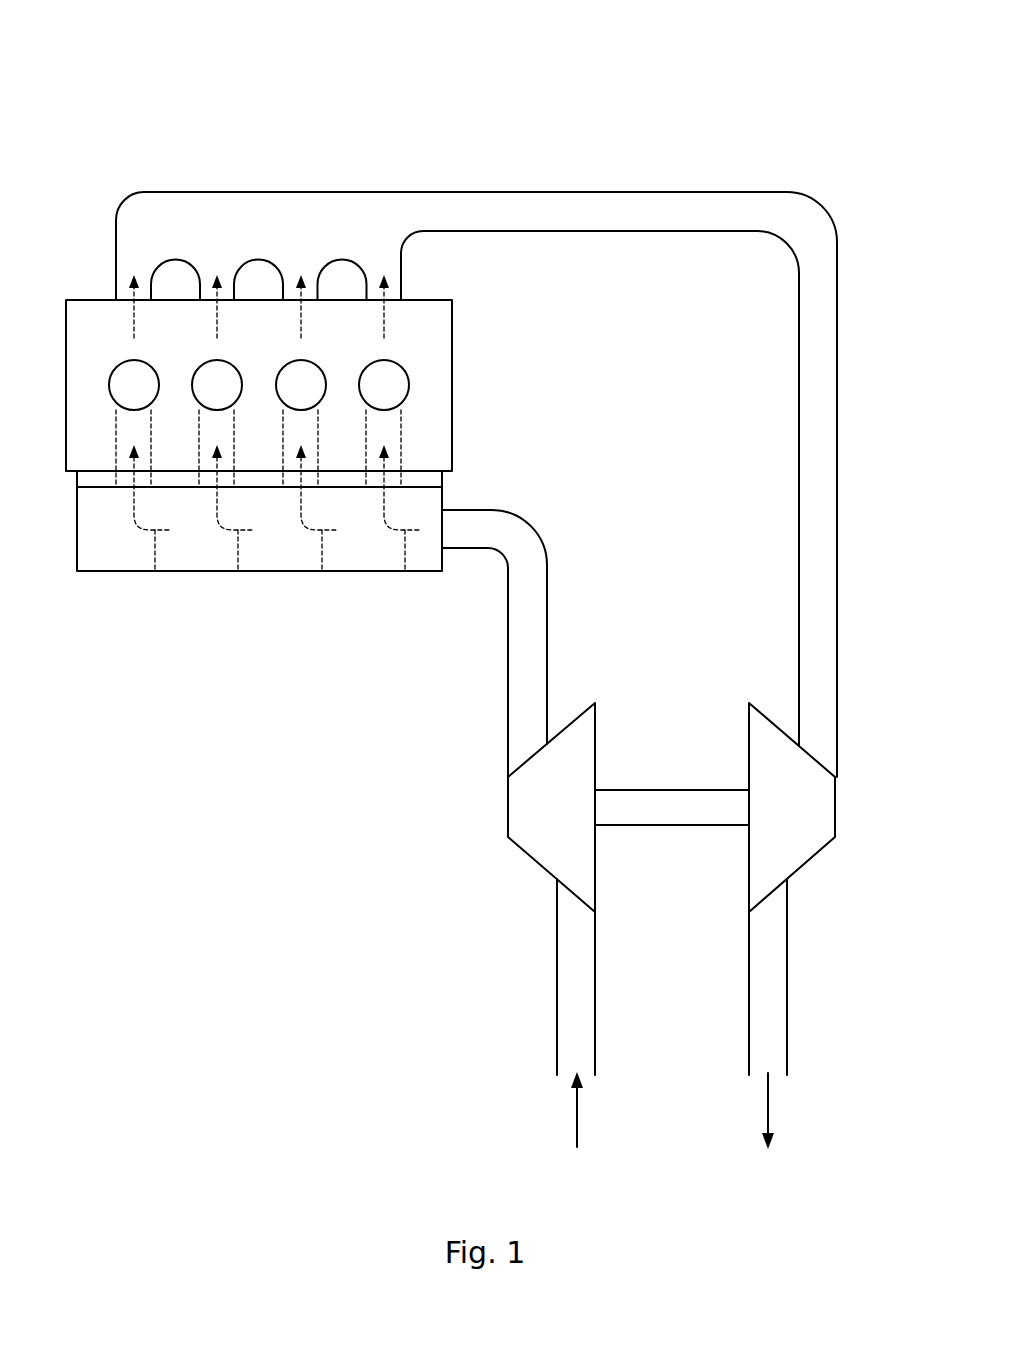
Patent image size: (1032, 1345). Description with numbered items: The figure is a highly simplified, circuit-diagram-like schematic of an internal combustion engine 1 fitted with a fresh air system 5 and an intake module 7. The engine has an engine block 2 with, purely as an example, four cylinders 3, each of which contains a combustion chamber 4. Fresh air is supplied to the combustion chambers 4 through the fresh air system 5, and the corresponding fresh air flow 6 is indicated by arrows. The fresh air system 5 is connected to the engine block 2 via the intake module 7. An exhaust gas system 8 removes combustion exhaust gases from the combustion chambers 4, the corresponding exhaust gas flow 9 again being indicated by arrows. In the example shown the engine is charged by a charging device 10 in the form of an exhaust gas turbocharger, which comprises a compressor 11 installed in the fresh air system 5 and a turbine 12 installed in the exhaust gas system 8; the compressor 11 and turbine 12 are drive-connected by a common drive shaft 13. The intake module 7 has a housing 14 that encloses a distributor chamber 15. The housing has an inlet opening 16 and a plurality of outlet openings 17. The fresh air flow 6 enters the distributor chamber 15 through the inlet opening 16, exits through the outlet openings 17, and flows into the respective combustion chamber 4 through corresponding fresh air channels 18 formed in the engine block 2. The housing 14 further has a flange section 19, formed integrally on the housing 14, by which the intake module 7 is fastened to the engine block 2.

The internal combustion engine 1 is at (828, 152).
The engine block 2 is at (452, 383).
The cylinder 3 is at (150, 366).
The combustion chamber 4 is at (128, 397).
The fresh air system 5 is at (548, 566).
The fresh air flow 6 is at (155, 571).
The intake module 7 is at (273, 572).
The exhaust gas system 8 is at (582, 192).
The exhaust gas flow 9 is at (134, 318).
The charging device 10 is at (478, 806).
The compressor 11 is at (585, 750).
The turbine 12 is at (763, 752).
The common drive shaft 13 is at (673, 818).
The housing 14 is at (107, 573).
The distributor chamber 15 is at (265, 557).
The inlet opening 16 is at (443, 530).
The outlet opening 17 is at (143, 490).
The fresh air channel 18 is at (155, 443).
The flange section 19 is at (436, 473).